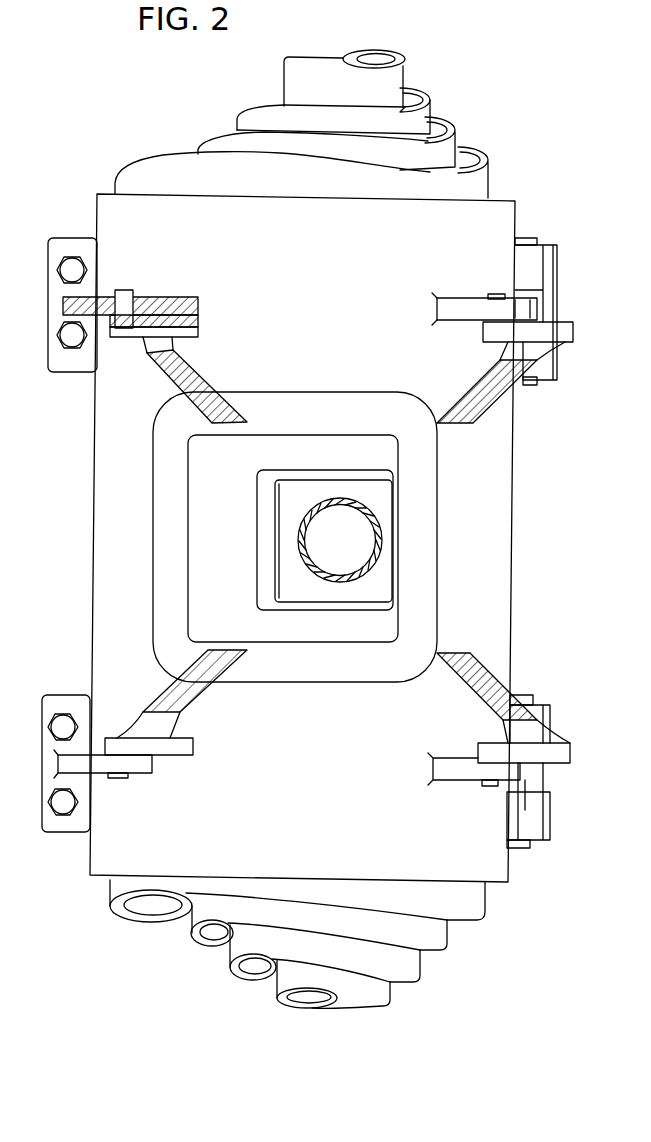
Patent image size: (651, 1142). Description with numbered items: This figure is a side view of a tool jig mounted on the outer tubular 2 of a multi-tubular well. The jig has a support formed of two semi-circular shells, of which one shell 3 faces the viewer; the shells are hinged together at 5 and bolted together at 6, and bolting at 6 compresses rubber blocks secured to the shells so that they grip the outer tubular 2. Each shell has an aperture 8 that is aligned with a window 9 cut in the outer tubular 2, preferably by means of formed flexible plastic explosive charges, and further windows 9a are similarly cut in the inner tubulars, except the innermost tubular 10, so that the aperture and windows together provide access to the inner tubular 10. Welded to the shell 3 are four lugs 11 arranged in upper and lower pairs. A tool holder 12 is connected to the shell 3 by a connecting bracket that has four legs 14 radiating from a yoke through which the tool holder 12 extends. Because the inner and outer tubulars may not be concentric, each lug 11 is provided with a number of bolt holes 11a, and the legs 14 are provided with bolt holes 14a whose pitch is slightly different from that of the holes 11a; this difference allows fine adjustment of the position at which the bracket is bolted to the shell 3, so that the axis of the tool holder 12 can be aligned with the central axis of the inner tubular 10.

The outer tubular 2 is at (472, 908).
The semi-circular shell 3 is at (331, 278).
The hinge 5 is at (543, 388).
The bolts 6 is at (73, 338).
The aperture 8 is at (160, 532).
The window 9 is at (190, 603).
The further windows 9a is at (258, 528).
The innermost tubular 10 is at (297, 573).
The lugs 11 is at (458, 305).
The bolt holes 11a is at (162, 296).
The tool holder 12 is at (383, 542).
The legs 14 is at (172, 354).
The bolt holes 14a is at (163, 326).